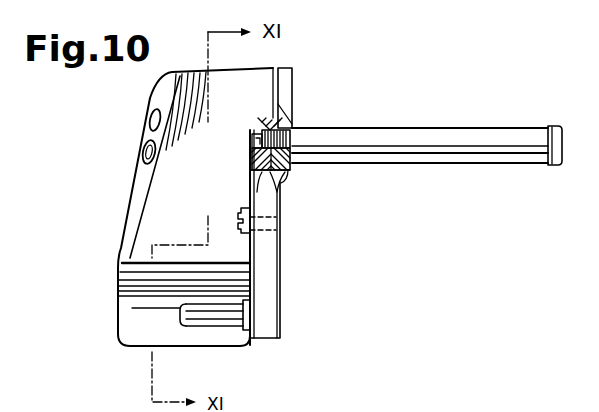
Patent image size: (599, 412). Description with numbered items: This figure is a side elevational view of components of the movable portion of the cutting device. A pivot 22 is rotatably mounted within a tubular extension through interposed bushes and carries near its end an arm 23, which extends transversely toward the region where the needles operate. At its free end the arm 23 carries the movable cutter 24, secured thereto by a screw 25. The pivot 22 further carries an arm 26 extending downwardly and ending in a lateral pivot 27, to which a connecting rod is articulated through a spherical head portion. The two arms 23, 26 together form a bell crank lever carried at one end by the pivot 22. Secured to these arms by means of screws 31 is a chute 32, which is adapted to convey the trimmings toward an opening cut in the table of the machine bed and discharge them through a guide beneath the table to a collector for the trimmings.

The pivot 22 is at (418, 136).
The arm 23 is at (282, 181).
The movable cutter 24 is at (292, 76).
The screw 25 is at (256, 118).
The arm 26 is at (270, 273).
The lateral pivot 27 is at (211, 312).
The screws 31 is at (272, 226).
The chute 32 is at (148, 228).